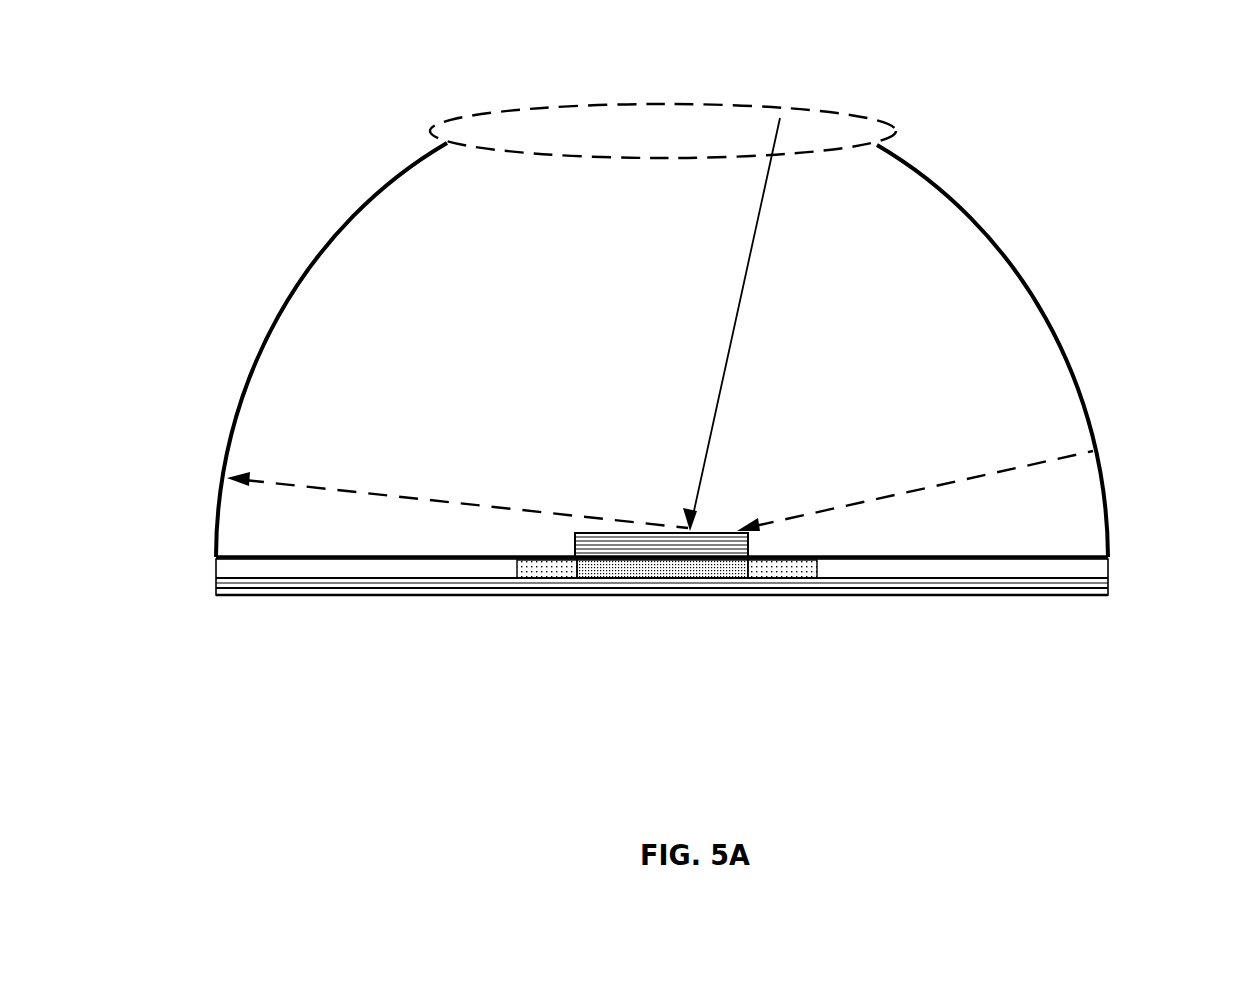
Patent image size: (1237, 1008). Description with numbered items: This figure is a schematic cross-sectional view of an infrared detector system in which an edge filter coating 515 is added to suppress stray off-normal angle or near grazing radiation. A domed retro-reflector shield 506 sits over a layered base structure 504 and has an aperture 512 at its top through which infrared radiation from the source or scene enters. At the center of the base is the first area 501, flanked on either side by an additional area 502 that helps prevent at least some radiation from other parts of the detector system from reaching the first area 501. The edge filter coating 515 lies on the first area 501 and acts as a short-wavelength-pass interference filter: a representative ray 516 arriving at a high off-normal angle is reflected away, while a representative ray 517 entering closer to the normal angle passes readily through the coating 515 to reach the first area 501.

The first area 501 is at (628, 567).
The additional area 502 is at (537, 567).
The substrate stack 504 is at (1112, 561).
The retro-reflector shield 506 is at (1052, 323).
The top opening outline (dashed) 512 is at (820, 127).
The edge filter coating 515 is at (610, 538).
The representative ray 516 is at (988, 472).
The representative ray 517 is at (748, 323).